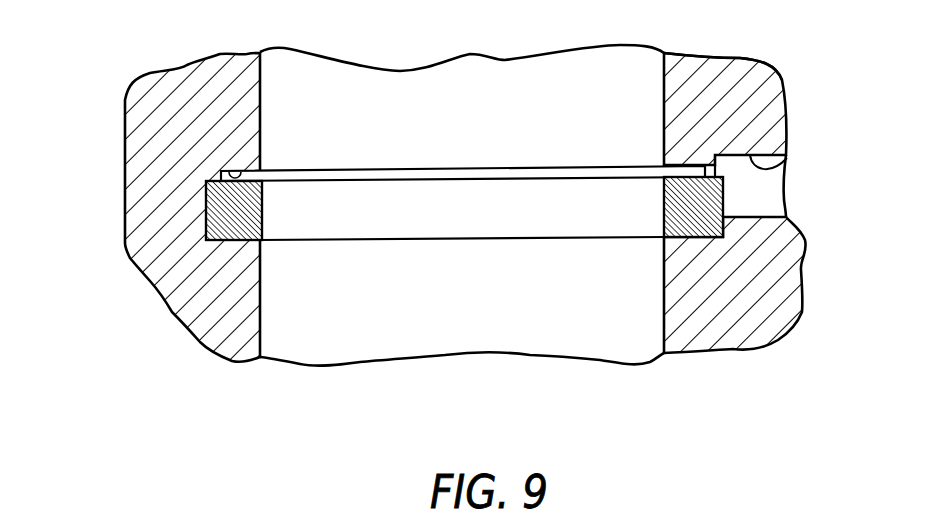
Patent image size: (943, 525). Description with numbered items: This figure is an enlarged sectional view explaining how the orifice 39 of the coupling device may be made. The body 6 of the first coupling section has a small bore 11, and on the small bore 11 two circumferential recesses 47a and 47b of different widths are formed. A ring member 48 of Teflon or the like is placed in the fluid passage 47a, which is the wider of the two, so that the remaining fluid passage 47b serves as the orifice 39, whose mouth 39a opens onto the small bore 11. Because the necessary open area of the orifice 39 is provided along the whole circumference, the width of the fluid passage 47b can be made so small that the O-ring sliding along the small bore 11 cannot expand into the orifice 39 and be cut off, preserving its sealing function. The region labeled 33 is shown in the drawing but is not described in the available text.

The body 6 is at (696, 77).
The orifice 39 is at (746, 56).
The mouth of the orifice 39a is at (668, 170).
The passage 33 is at (788, 158).
The circumferential recess 47a is at (228, 241).
The circumferential recess 47b is at (240, 172).
The small bore 11 is at (667, 322).
The ring member 48 is at (704, 238).